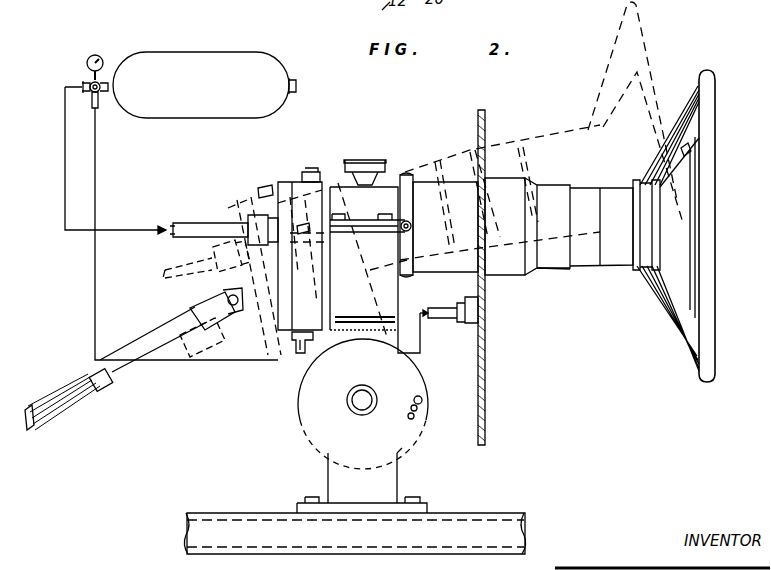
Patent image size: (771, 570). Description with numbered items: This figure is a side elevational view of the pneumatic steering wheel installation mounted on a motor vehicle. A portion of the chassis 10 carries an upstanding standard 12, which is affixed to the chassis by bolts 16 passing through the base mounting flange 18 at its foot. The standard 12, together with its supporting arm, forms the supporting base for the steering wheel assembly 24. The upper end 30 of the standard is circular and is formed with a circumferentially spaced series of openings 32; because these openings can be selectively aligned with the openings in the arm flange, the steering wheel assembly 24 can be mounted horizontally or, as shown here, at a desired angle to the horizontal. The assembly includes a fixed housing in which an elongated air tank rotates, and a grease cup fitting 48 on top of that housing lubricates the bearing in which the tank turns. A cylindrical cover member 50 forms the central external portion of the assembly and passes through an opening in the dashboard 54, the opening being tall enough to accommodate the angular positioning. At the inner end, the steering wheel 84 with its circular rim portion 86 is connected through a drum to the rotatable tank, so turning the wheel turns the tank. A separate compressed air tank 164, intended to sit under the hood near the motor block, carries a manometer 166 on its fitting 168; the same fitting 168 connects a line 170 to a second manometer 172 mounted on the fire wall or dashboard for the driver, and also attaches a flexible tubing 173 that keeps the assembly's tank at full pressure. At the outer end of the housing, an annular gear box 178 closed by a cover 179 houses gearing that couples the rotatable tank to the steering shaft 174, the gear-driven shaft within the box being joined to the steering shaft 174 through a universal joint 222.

The chassis 10 is at (525, 520).
The standard 12 is at (398, 475).
The bolts 16 is at (420, 500).
The base mounting flanges 18 is at (427, 505).
The steering wheel assembly 24 is at (512, 142).
The upper ends of the standards 30 is at (415, 378).
The openings 32 is at (422, 400).
The grease cup fitting 48 is at (378, 160).
The cylindrical cover member 50 is at (529, 268).
The dashboard 54 is at (485, 118).
The steering wheel 84 is at (724, 162).
The circular rim portion 86 is at (716, 196).
The compressed air tank 164 is at (209, 56).
The manometer 166 is at (96, 52).
The fitting 168 is at (100, 83).
The line 170 is at (95, 176).
The manometer 172 is at (488, 318).
The flexible tubing 173 is at (65, 140).
The steering shaft 174 is at (72, 402).
The gear box 178 is at (323, 192).
The cover 179 is at (268, 184).
The universal joint 222 is at (205, 300).